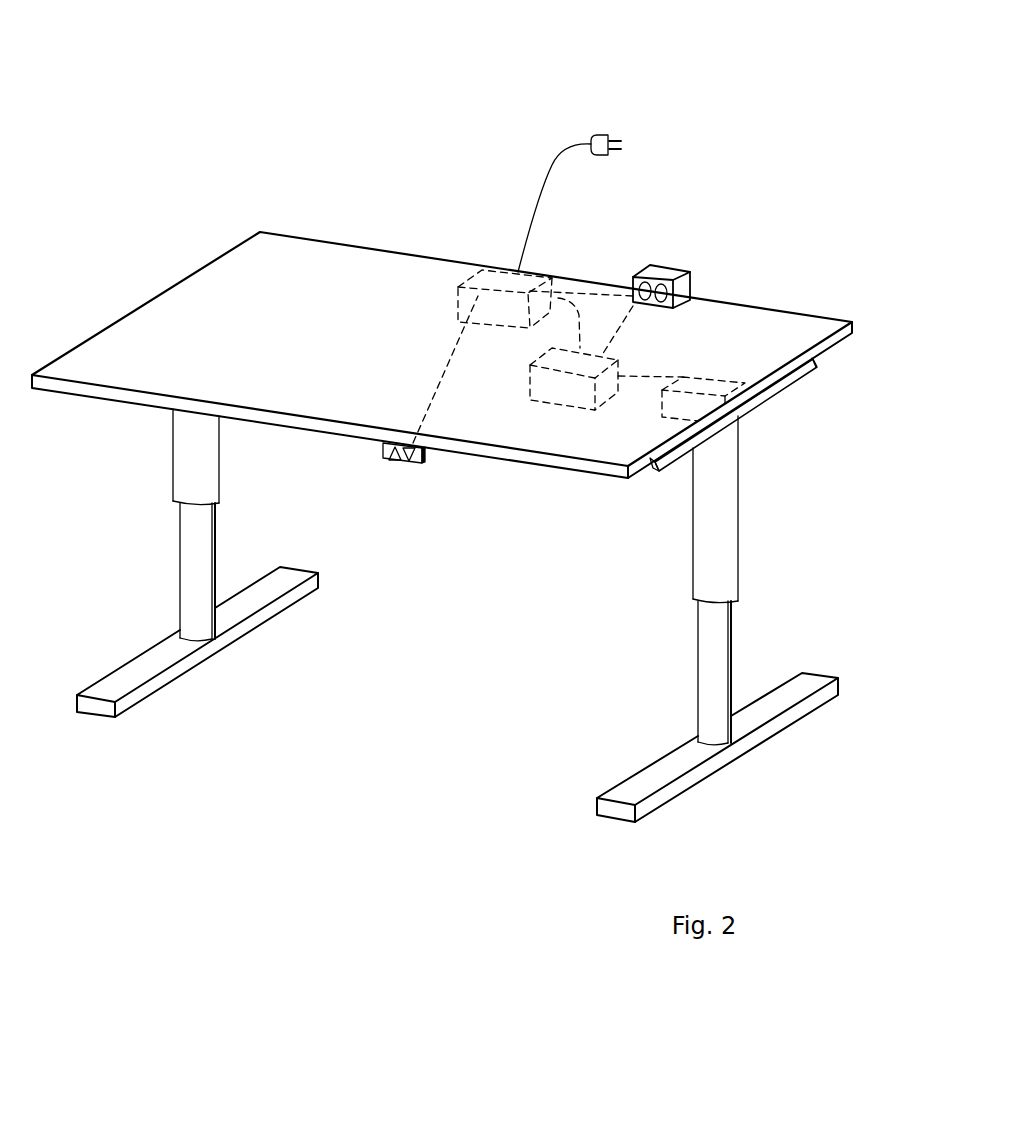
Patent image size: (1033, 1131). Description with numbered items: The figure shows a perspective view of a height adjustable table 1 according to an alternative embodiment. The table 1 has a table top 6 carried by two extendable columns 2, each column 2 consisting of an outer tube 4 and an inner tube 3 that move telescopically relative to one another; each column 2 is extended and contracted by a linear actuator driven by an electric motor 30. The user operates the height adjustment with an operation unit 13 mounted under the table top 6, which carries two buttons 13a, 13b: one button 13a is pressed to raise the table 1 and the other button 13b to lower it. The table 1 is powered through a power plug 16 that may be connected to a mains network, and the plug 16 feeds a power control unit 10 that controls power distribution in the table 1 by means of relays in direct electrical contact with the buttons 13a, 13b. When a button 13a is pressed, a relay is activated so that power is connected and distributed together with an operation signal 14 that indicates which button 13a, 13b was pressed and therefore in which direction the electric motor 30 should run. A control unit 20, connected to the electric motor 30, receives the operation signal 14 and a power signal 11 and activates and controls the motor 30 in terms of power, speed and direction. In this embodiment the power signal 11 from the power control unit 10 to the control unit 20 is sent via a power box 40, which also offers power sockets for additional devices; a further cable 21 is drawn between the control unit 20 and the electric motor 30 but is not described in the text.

The height adjustable table 1 is at (422, 697).
The extendable column 2 is at (255, 532).
The inner tube 3 is at (697, 667).
The outer tube 4 is at (693, 557).
The table top 6 is at (182, 278).
The power control unit 10 is at (492, 272).
The power signal 11 is at (588, 297).
The operation unit 13 is at (412, 464).
The button 13a is at (383, 457).
The button 13b is at (424, 463).
The operation signal 14 is at (558, 298).
The power plug 16 is at (608, 134).
The control unit 20 is at (582, 399).
The cable 21 is at (633, 377).
The electric motor 30 is at (725, 377).
The power box 40 is at (657, 266).